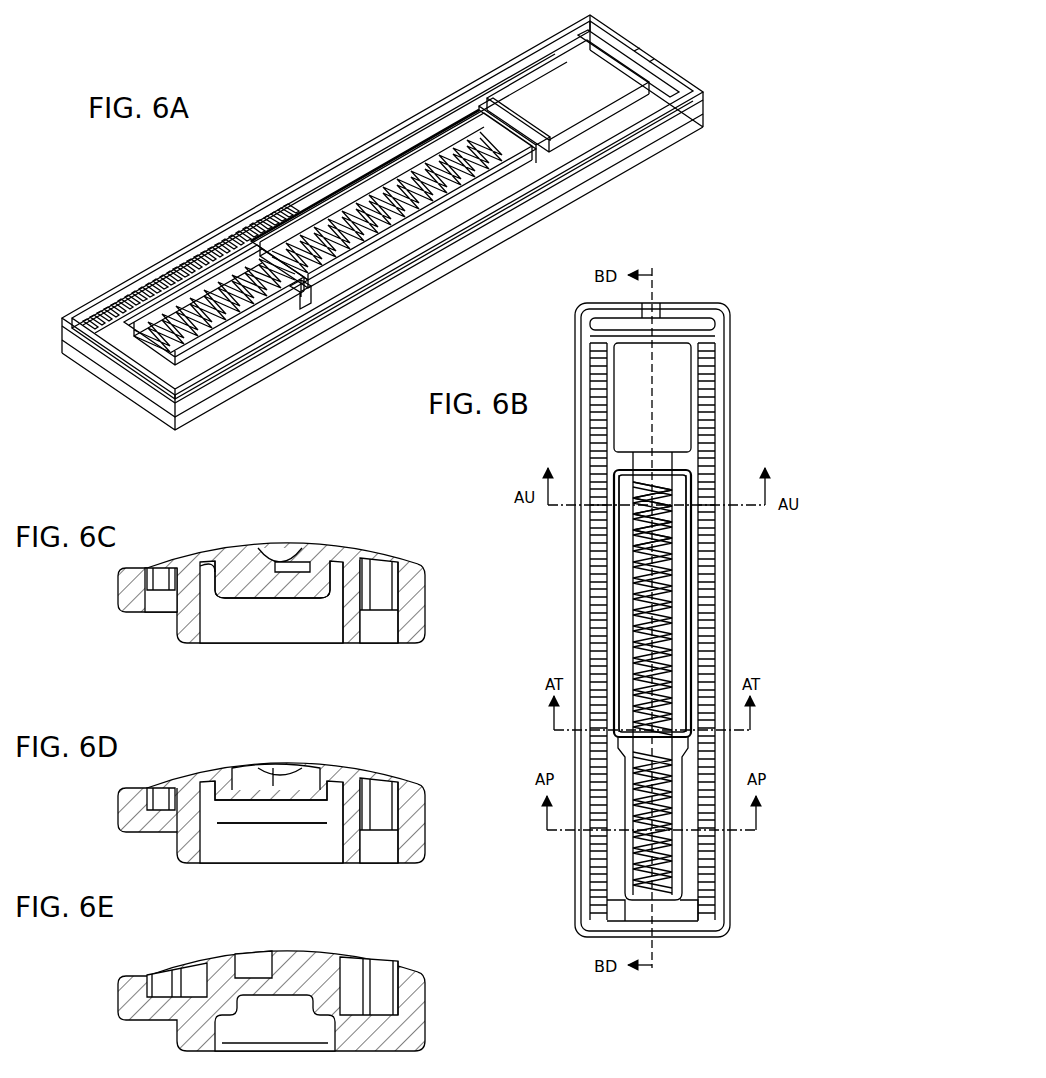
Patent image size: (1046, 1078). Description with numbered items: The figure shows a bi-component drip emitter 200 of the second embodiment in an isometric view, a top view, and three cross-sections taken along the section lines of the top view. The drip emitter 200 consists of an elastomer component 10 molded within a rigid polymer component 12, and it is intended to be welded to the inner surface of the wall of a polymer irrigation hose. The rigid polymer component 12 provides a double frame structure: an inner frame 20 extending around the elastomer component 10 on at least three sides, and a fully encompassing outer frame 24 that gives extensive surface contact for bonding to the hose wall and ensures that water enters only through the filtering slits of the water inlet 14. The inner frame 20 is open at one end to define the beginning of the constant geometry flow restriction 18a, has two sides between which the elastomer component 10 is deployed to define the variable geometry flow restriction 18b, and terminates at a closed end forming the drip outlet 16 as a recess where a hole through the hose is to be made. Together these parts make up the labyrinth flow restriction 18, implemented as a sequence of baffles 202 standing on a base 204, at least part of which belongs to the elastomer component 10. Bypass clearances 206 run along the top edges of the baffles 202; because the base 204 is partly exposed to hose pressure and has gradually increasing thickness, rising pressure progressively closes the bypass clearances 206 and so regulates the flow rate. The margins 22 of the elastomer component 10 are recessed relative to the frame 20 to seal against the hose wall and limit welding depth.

In FIG. 6A, the elastomer component 10 is at (418, 136).
In FIG. 6B, the elastomer component 10 is at (680, 545).
In FIG. 6C, the elastomer component 10 is at (222, 615).
In FIG. 6D, the elastomer component 10 is at (229, 803).
In FIG. 6E, the elastomer component 10 is at (214, 920).
In FIG. 6A, the rigid polymer component 12 is at (118, 377).
In FIG. 6B, the rigid polymer component 12 is at (733, 866).
In FIG. 6C, the rigid polymer component 12 is at (121, 604).
In FIG. 6D, the rigid polymer component 12 is at (125, 827).
In FIG. 6E, the rigid polymer component 12 is at (123, 1014).
In FIG. 6A, the water inlet 14 is at (107, 326).
In FIG. 6B, the water inlet 14 is at (706, 905).
In FIG. 6A, the drip outlet 16 is at (577, 100).
In FIG. 6B, the drip outlet 16 is at (662, 395).
In FIG. 6B, the flow restriction 18 is at (673, 636).
In FIG. 6A, the constant geometry flow restriction 18a is at (218, 276).
In FIG. 6B, the constant geometry flow restriction 18a is at (640, 783).
In FIG. 6E, the constant geometry flow restriction 18a is at (257, 960).
In FIG. 6A, the variable geometry flow restriction 18b is at (415, 142).
In FIG. 6B, the variable geometry flow restriction 18b is at (668, 500).
In FIG. 6A, the frame 20 is at (490, 180).
In FIG. 6B, the frame 20 is at (598, 570).
In FIG. 6C, the frame 20 is at (362, 550).
In FIG. 6D, the frame 20 is at (363, 772).
In FIG. 6E, the frame 20 is at (213, 953).
In FIG. 6A, the margins 22 is at (427, 200).
In FIG. 6B, the margins 22 is at (622, 583).
In FIG. 6C, the margins 22 is at (328, 550).
In FIG. 6D, the margins 22 is at (330, 772).
In FIG. 6A, the outer frame 24 is at (297, 323).
In FIG. 6B, the outer frame 24 is at (578, 906).
In FIG. 6C, the outer frame 24 is at (136, 568).
In FIG. 6D, the outer frame 24 is at (136, 787).
In FIG. 6E, the outer frame 24 is at (137, 974).
In FIG. 6B, the drip emitter 200 is at (694, 290).
In FIG. 6C, the drip emitter 200 is at (428, 540).
In FIG. 6D, the drip emitter 200 is at (415, 766).
In FIG. 6E, the drip emitter 200 is at (414, 956).
In FIG. 6A, the baffles 202 is at (355, 208).
In FIG. 6B, the baffles 202 is at (665, 588).
In FIG. 6C, the baffles 202 is at (276, 548).
In FIG. 6D, the baffles 202 is at (274, 768).
In FIG. 6A, the base 204 is at (287, 253).
In FIG. 6B, the base 204 is at (700, 722).
In FIG. 6C, the base 204 is at (268, 590).
In FIG. 6D, the base 204 is at (256, 800).
In FIG. 6C, the bypass clearances 206 is at (251, 553).
In FIG. 6D, the bypass clearances 206 is at (236, 790).